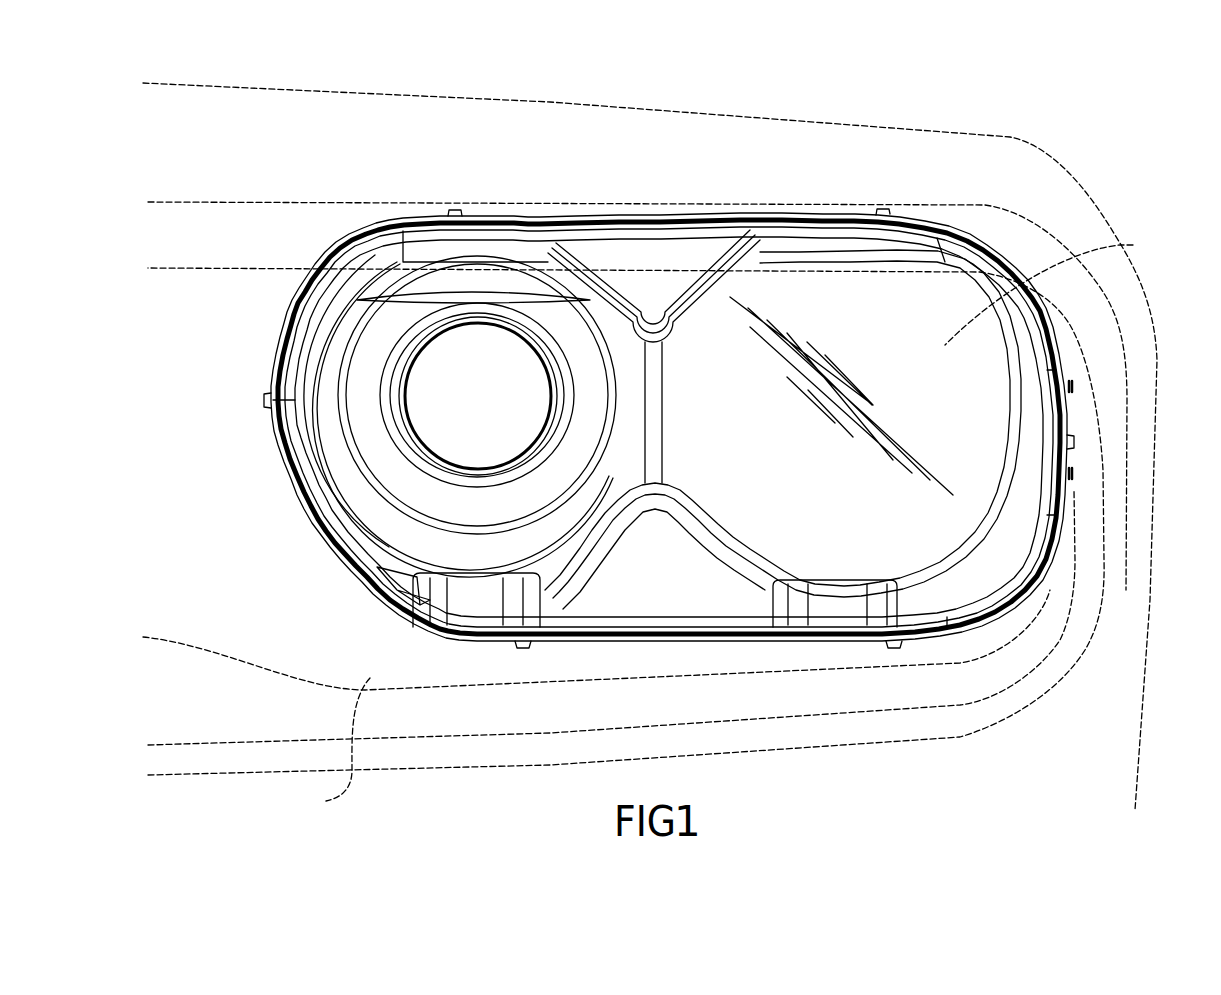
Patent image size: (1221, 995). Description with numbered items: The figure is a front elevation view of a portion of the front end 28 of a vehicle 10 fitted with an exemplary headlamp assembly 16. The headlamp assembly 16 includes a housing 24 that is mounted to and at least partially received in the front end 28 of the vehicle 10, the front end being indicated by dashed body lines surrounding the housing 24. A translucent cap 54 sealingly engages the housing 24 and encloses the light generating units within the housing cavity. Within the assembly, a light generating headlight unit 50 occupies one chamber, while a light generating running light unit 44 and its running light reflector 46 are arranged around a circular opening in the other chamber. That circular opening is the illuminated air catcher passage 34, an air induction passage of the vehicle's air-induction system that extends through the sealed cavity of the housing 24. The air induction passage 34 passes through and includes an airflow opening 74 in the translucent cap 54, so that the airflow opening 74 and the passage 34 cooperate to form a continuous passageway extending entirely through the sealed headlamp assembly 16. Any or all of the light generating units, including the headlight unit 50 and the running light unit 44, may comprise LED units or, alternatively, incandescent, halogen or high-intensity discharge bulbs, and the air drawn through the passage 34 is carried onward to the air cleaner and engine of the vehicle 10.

The vehicle 10 is at (930, 130).
The headlamp assembly 16 is at (676, 214).
The housing 24 is at (1030, 610).
The front end 28 is at (336, 746).
The illuminated air catcher passage 34 is at (422, 403).
The running light unit 44 is at (522, 500).
The running light reflector 46 is at (550, 530).
The headlight unit 50 is at (1053, 290).
The translucent cap 54 is at (304, 325).
The airflow opening 74 is at (545, 440).